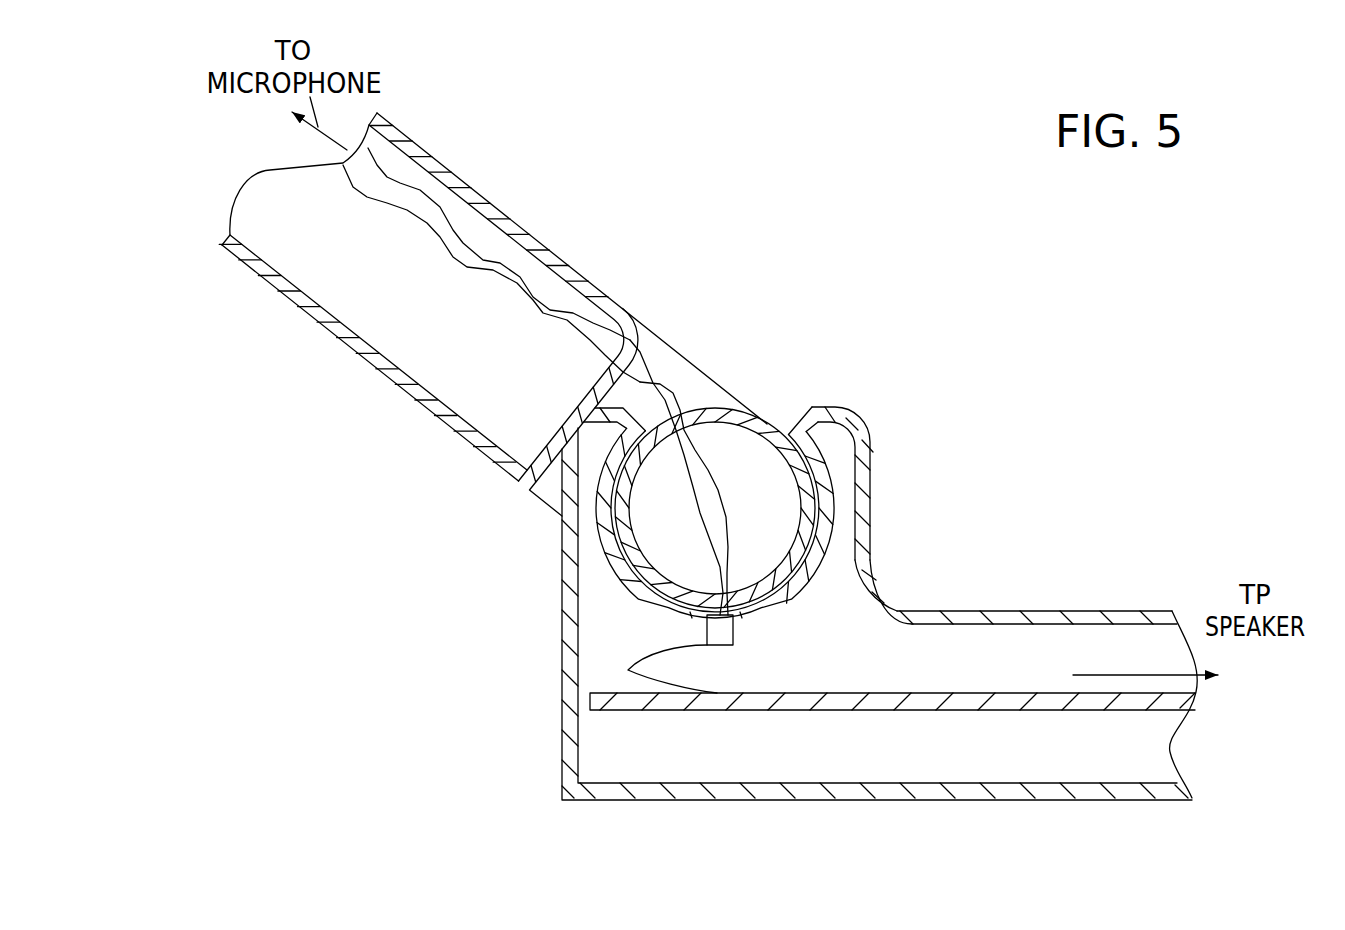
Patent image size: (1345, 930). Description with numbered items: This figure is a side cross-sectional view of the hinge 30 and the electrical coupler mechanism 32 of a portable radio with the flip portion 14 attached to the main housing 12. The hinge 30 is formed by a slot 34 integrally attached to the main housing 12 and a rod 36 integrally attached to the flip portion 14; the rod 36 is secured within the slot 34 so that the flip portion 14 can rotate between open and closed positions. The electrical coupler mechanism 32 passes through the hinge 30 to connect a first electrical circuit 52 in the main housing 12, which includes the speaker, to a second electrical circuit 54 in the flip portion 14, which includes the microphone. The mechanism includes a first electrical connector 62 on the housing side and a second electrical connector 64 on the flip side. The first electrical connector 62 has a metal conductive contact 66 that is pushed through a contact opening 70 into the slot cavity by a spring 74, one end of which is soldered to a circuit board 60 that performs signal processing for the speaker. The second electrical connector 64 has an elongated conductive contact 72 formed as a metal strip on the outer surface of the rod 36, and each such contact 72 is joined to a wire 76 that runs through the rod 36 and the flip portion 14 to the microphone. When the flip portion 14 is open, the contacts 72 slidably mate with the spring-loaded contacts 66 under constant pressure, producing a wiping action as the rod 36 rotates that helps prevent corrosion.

The main housing 12 is at (1113, 608).
The flip portion 14 is at (605, 160).
The hinge 30 is at (786, 408).
The electrical coupler mechanism 32 is at (828, 597).
The slot 34 is at (836, 465).
The rod 36 is at (733, 414).
The first electrical circuit 52 is at (883, 691).
The second electrical circuit 54 is at (398, 163).
The circuit board 60 is at (1132, 708).
The first electrical connector 62 is at (748, 641).
The second electrical connector 64 is at (733, 583).
The conductive contact 66 is at (703, 636).
The contact opening 70 is at (740, 624).
The conductive contact 72 is at (673, 610).
The spring 74 is at (628, 670).
The wire 76 is at (492, 268).